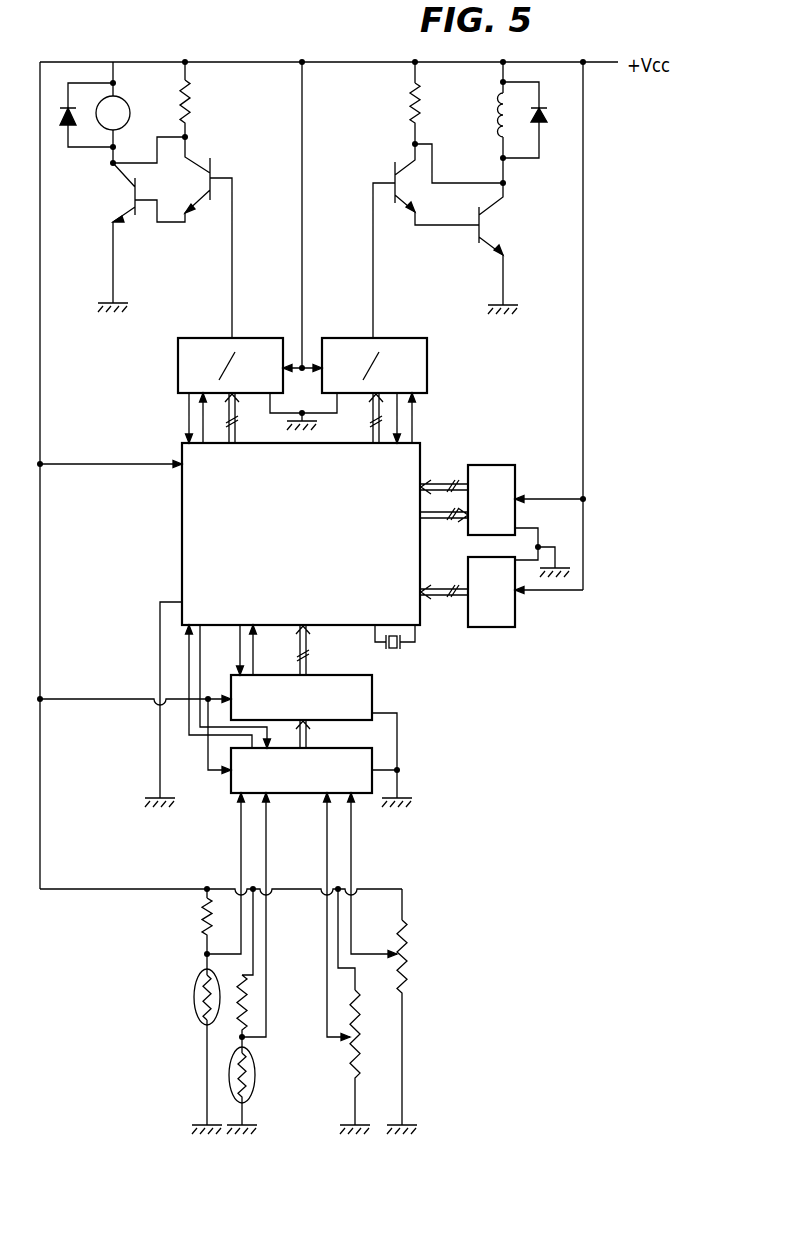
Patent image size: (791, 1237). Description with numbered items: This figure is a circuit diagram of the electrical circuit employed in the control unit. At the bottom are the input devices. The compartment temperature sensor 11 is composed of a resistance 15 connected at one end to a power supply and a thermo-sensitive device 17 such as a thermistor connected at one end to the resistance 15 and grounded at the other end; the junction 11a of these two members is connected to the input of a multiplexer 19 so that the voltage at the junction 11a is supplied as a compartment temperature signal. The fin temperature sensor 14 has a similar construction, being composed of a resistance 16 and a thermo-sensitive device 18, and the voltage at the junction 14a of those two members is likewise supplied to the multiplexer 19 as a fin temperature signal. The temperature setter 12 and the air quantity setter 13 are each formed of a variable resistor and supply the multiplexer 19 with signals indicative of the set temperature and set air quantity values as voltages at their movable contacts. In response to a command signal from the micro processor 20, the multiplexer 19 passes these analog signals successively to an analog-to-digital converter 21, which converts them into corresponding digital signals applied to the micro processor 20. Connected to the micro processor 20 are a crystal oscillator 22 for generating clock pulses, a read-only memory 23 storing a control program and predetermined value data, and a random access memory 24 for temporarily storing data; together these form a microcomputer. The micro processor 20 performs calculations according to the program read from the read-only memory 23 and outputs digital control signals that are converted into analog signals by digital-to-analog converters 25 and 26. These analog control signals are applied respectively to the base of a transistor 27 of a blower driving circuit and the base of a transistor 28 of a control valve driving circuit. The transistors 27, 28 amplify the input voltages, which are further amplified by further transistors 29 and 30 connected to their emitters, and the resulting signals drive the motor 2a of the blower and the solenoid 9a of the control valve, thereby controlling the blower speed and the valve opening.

The motor 2a is at (127, 102).
The transistor 27 is at (215, 168).
The further transistor 29 is at (123, 198).
The transistor 28 is at (393, 178).
The further transistor 30 is at (488, 226).
The solenoid 9a is at (494, 115).
The digital-to-analog converter 25 is at (253, 338).
The digital-to-analog converter 26 is at (402, 338).
The micro processor 20 is at (182, 522).
The random access memory (RAM) 24 is at (490, 465).
The read-only memory (ROM) 23 is at (496, 627).
The crystal oscillator 22 is at (396, 652).
The analog-to-digital converter 21 is at (342, 675).
The multiplexer 19 is at (297, 795).
The resistance 15 is at (198, 917).
The junction 11a is at (203, 954).
The compartment temperature sensor 11 is at (190, 1010).
The thermo-sensitive device 17 is at (193, 992).
The resistance 16 is at (240, 1013).
The junction 14a is at (246, 1043).
The fin temperature sensor 14 is at (265, 1080).
The thermo-sensitive device 18 is at (257, 1062).
The temperature setter 12 is at (360, 1022).
The air quantity setter 13 is at (412, 951).